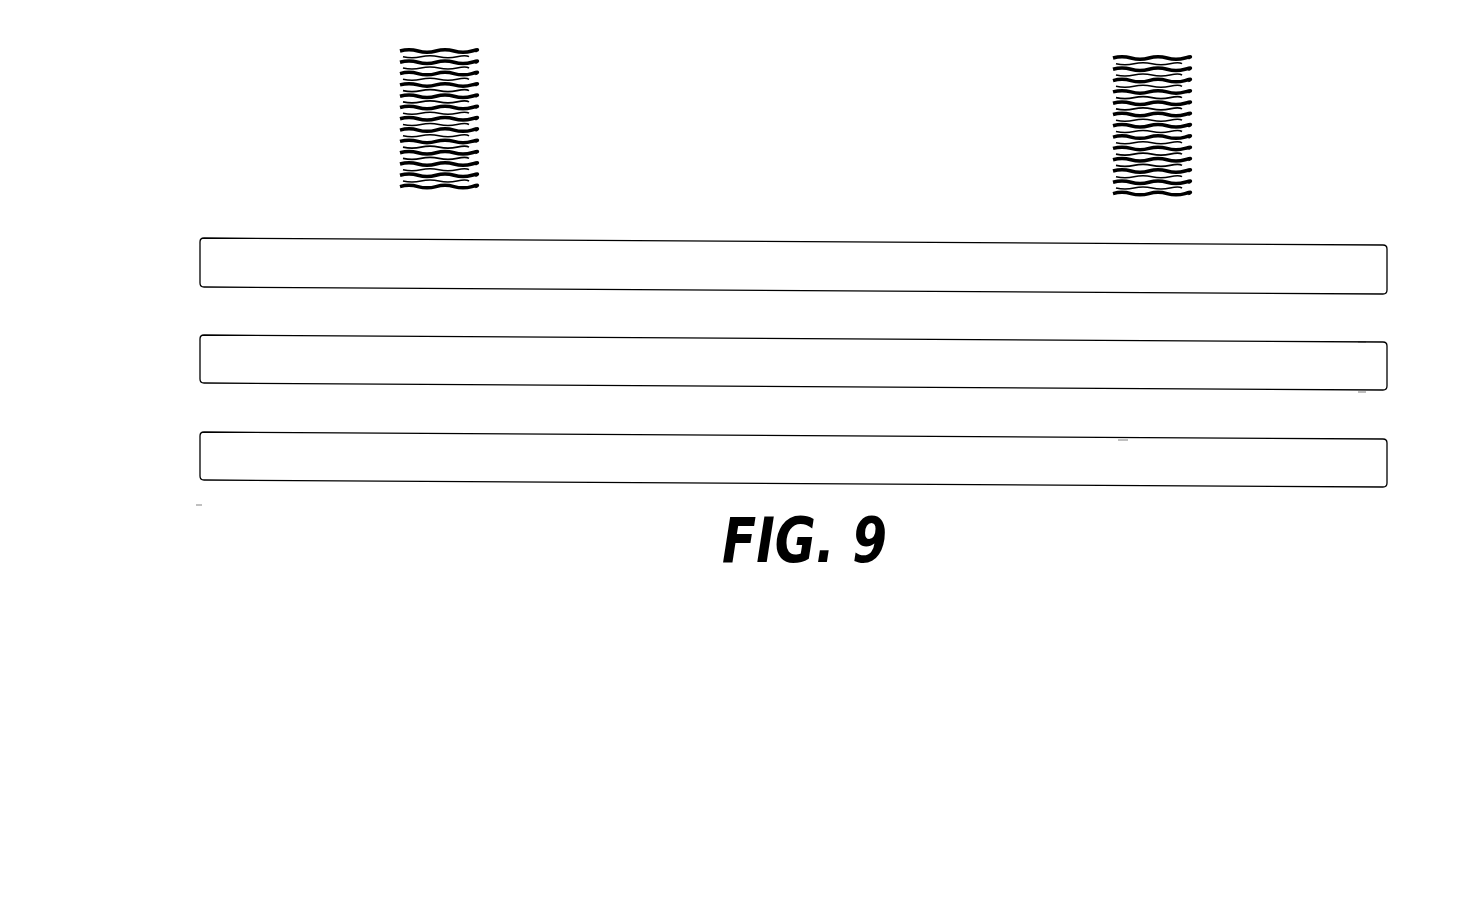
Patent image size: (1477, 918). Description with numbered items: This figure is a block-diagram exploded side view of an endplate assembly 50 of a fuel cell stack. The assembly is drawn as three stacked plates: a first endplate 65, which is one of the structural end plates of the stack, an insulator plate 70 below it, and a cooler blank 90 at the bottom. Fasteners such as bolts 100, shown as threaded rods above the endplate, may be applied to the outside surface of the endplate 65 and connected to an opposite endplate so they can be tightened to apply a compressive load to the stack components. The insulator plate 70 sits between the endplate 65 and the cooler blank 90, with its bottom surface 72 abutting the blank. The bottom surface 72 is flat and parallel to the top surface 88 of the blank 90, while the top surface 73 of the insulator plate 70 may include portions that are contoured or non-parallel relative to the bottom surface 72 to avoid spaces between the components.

The endplate assembly 50 is at (198, 507).
The first endplate 65 is at (793, 266).
The insulator plate 70 is at (793, 362).
The bottom surface 72 is at (1362, 396).
The top surface 73 is at (1362, 340).
The top surface 88 is at (1123, 438).
The cooler blank 90 is at (793, 459).
The bolts 100 is at (1187, 132).